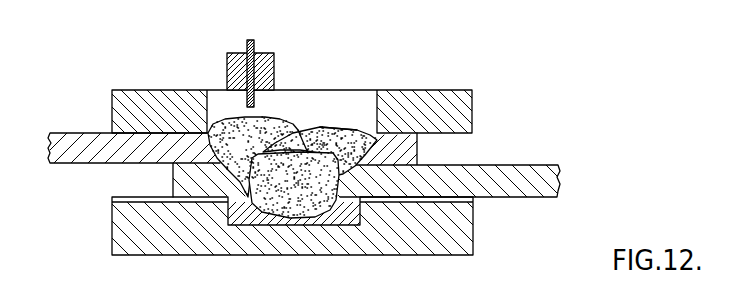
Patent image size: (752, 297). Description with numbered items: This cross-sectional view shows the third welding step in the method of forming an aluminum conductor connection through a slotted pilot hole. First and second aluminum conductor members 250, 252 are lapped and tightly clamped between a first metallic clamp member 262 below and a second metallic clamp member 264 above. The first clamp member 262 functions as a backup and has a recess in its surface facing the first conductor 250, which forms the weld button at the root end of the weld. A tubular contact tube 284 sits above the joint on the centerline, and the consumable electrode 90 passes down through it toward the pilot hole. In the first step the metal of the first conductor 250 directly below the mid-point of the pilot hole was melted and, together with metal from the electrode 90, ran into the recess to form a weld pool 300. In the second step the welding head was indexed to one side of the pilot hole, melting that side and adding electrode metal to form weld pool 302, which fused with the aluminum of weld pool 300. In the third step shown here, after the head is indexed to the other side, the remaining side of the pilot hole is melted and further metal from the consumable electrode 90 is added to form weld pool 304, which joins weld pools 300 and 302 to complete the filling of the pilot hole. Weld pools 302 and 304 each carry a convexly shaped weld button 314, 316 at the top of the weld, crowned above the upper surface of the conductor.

The consumable electrode 90 is at (248, 43).
The first aluminum conductor member 250 is at (568, 151).
The second aluminum conductor member 252 is at (103, 140).
The first metallic clamp member 262 is at (447, 257).
The second metallic clamp member 264 is at (472, 113).
The tubular contact tube 284 is at (274, 63).
The weld pool 300 is at (312, 205).
The weld pool 302 is at (357, 130).
The weld pool 304 is at (232, 120).
The weld button 314 is at (275, 130).
The weld button 316 is at (333, 127).